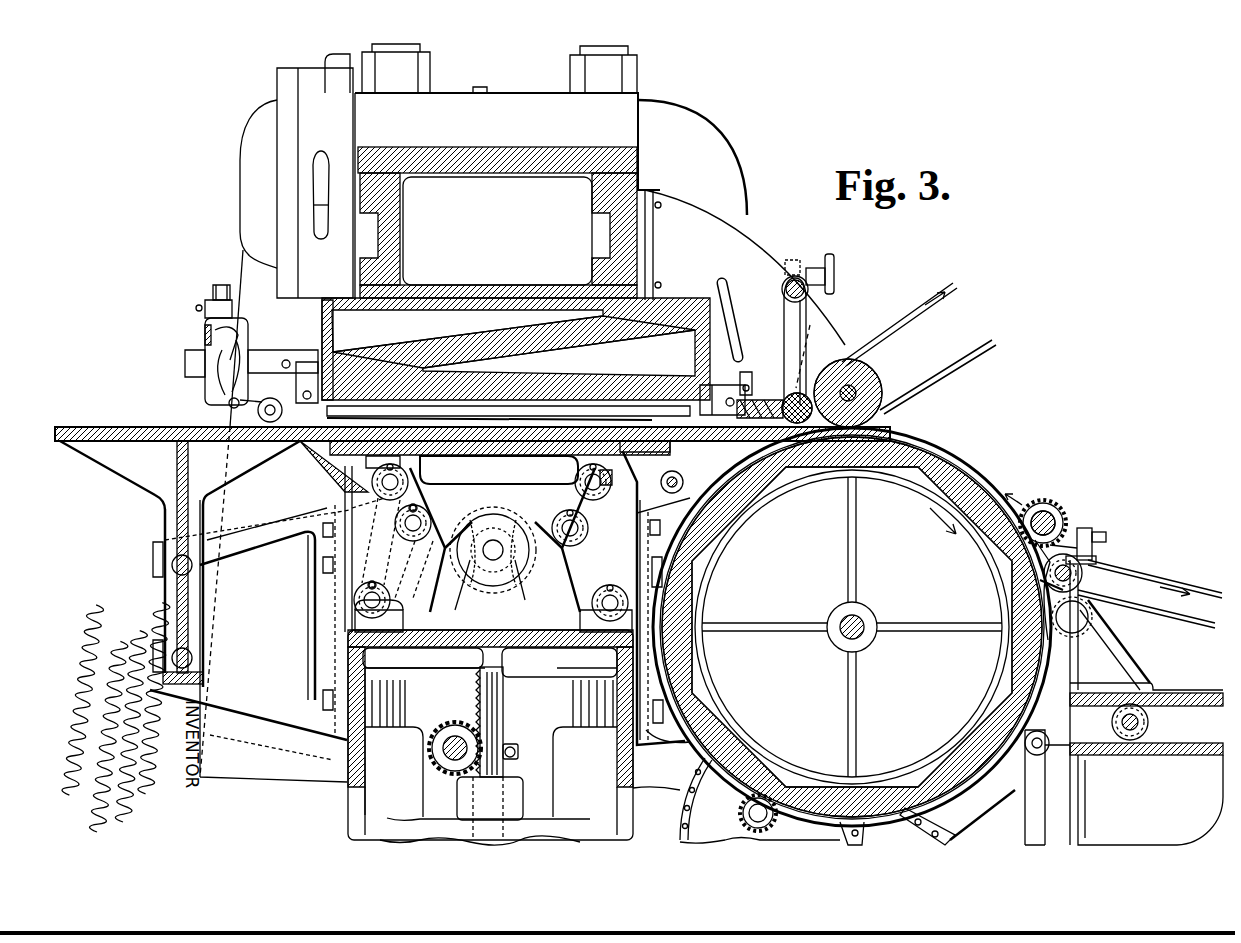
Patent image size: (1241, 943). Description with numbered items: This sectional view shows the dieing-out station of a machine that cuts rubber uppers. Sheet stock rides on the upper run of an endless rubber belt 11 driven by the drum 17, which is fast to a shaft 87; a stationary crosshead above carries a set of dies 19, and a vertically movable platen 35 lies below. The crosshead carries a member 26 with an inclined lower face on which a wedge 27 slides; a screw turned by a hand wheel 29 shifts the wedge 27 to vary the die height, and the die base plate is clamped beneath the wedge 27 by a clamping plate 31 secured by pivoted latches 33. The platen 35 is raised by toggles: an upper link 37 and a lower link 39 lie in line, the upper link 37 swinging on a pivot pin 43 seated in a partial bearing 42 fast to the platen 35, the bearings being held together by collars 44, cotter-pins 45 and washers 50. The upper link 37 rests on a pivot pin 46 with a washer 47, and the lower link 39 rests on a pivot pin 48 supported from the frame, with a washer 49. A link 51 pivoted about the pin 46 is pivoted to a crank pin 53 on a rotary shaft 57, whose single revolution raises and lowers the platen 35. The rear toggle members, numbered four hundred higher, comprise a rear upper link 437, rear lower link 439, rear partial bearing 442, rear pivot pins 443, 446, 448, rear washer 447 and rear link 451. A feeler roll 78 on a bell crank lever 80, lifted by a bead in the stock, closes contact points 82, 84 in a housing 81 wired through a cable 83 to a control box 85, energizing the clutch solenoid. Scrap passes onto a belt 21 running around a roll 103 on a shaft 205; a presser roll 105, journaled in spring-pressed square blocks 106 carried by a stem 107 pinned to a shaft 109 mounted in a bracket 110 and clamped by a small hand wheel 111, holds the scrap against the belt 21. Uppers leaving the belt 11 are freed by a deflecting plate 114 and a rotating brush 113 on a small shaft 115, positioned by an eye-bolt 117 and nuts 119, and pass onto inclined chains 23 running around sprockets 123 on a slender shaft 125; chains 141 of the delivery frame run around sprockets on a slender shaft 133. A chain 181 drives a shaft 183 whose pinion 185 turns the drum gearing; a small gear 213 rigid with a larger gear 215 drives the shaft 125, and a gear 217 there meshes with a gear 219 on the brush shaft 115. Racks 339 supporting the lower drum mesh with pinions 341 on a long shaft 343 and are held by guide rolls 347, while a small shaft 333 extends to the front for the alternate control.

The endless rubber belt 11 is at (122, 428).
The drum 17 is at (970, 478).
The dies 19 is at (620, 394).
The belt 21 is at (928, 306).
The spaced chains 23 is at (1192, 590).
The member 26 is at (656, 306).
The wedge 27 is at (690, 310).
The hand wheel 29 is at (736, 296).
The clamping plate 31 is at (717, 410).
The latches 33 is at (330, 366).
The platen 35 is at (682, 446).
The upper link 37 is at (445, 484).
The lower link 39 is at (383, 545).
The partial bearing 42 is at (366, 462).
The pivot pin 43 is at (372, 485).
The collars 44 is at (352, 508).
The cotter-pins 45 is at (422, 470).
The pivot pin 46 is at (395, 524).
The washer 47 is at (420, 514).
The pivot pin 48 is at (356, 596).
The washer 49 is at (362, 579).
The washers 50 is at (343, 493).
The link 51 is at (412, 562).
The crank pin 53 is at (486, 522).
The rotary shaft 57 is at (466, 566).
The feeler 78 is at (303, 446).
The bell crank lever 80 is at (234, 378).
The housing 81 is at (200, 353).
The contact point 82 is at (243, 324).
The cable 83 is at (216, 290).
The contact point 84 is at (206, 328).
The control box 85 is at (246, 133).
The shaft 87 is at (862, 622).
The roll 103 is at (884, 386).
The presser roll 105 is at (803, 392).
The spring-pressed square block 106 is at (816, 330).
The stem 107 is at (786, 330).
The shaft 109 is at (800, 276).
The bracket 110 is at (762, 240).
The small hand wheel 111 is at (818, 266).
The rotating brush 113 is at (1068, 508).
The deflecting plate 114 is at (1036, 566).
The small shaft 115 is at (1046, 505).
The eye-bolt 117 is at (1096, 558).
The nuts 119 is at (1106, 538).
The sprockets 123 is at (1044, 586).
The slender shaft 125 is at (1112, 606).
The slender shaft 133 is at (1130, 740).
The chain 141 is at (1172, 696).
The chain 181 is at (678, 812).
The shaft 183 is at (750, 810).
The pinion 185 is at (740, 822).
The shaft 205 is at (858, 372).
The small gear 213 is at (1082, 636).
The larger gear 215 is at (1018, 680).
The gear 217 is at (1082, 578).
The gear 219 is at (1092, 530).
The small shaft 333 is at (700, 495).
The racks 339 is at (503, 690).
The pinions 341 is at (455, 724).
The long shaft 343 is at (442, 760).
The guide rolls 347 is at (515, 745).
The rear upper link 437 is at (560, 516).
The rear lower link 439 is at (590, 532).
The rear partial bearing 442 is at (690, 470).
The rear pivot pin 443 is at (578, 474).
The rear pivot pin 446 is at (518, 588).
The rear washer 447 is at (676, 520).
The rear pivot pin 448 is at (592, 606).
The rear link 451 is at (540, 556).